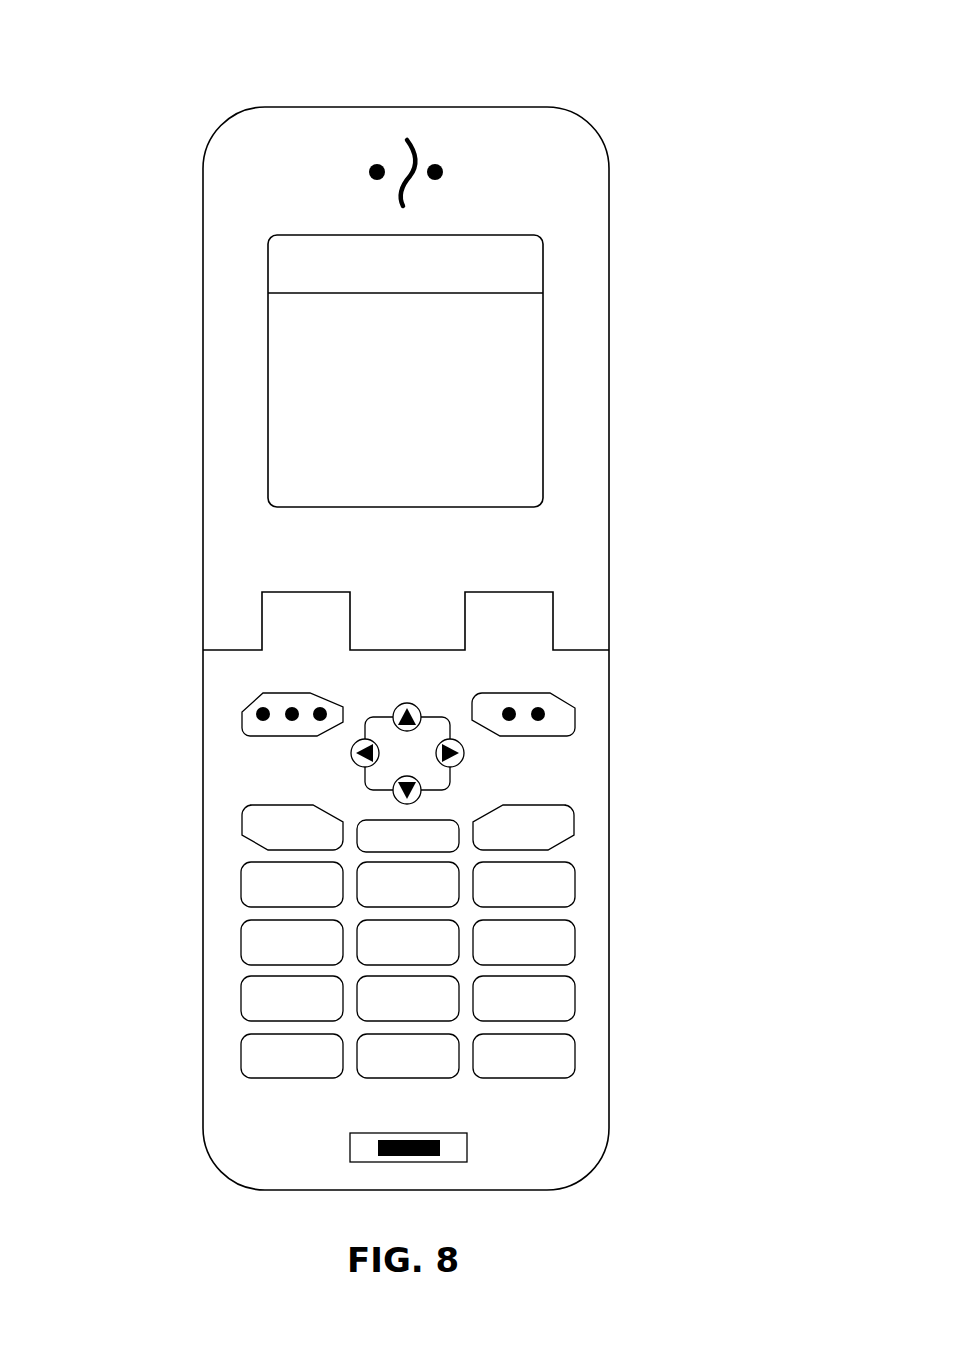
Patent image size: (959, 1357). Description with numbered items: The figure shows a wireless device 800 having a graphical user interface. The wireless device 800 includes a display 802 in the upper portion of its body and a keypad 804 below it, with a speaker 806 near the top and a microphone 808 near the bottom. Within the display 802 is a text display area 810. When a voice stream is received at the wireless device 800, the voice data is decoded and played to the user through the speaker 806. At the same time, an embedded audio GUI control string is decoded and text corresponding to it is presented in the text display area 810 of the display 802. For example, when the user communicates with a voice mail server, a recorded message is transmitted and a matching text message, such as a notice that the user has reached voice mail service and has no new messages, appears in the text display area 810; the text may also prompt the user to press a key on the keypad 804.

The wireless device 800 is at (176, 128).
The display 802 is at (508, 233).
The keypad 804 is at (560, 760).
The speaker 806 is at (410, 167).
The microphone 808 is at (440, 1148).
The text display area 810 is at (268, 431).